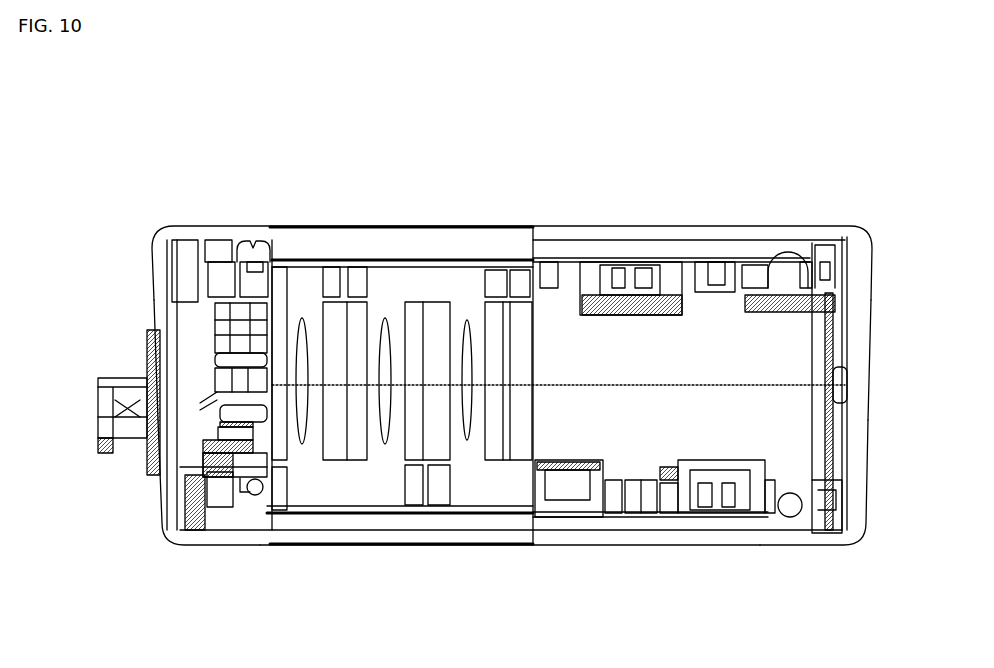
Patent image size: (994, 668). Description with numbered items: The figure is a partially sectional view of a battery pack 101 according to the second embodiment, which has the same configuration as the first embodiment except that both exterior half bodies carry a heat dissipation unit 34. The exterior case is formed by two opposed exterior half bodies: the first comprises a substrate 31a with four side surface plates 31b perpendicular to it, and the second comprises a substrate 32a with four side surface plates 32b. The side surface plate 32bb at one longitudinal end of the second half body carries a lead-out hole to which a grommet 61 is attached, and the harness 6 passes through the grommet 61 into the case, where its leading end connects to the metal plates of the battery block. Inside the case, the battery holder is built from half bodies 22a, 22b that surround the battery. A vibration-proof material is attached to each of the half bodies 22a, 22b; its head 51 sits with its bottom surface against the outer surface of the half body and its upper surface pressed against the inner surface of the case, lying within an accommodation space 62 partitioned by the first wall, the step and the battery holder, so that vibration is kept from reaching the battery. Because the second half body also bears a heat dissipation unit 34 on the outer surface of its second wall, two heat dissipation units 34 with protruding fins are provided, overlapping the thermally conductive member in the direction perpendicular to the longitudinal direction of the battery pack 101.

The battery pack 101 is at (234, 142).
The substrate 31a is at (186, 226).
The side surface plate 31b is at (871, 280).
The substrate 32a is at (253, 545).
The side surface plate 32b is at (868, 405).
The side surface plate 32bb is at (160, 495).
The heat dissipation unit 34 is at (440, 226).
The half body 22a is at (577, 315).
The half body 22b is at (575, 517).
The head 51 is at (254, 240).
The accommodation space 62 is at (272, 260).
The grommet 61 is at (147, 360).
The harness 6 is at (110, 455).